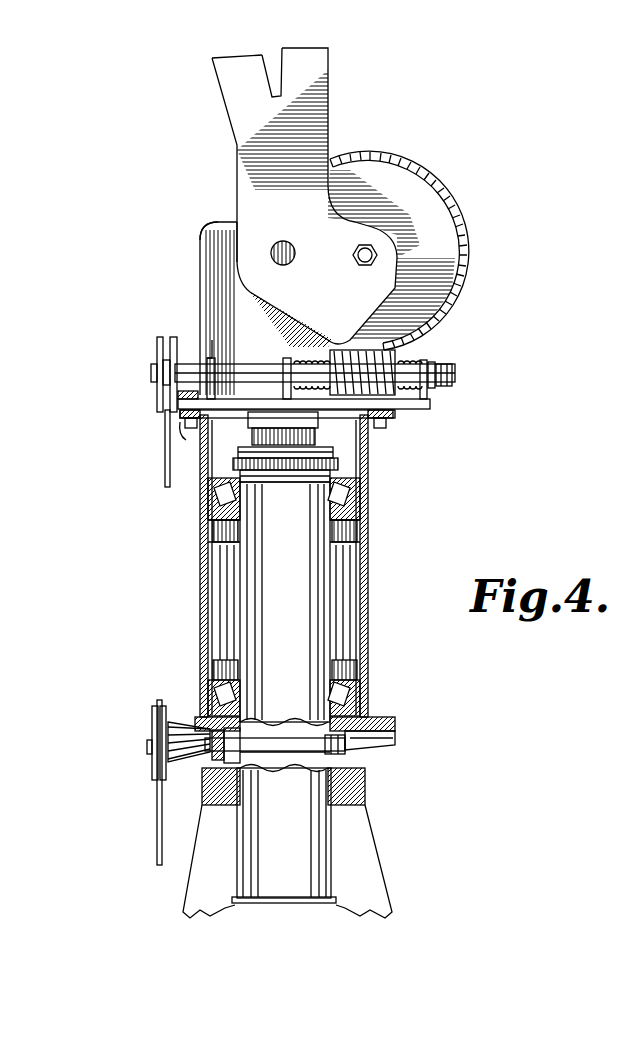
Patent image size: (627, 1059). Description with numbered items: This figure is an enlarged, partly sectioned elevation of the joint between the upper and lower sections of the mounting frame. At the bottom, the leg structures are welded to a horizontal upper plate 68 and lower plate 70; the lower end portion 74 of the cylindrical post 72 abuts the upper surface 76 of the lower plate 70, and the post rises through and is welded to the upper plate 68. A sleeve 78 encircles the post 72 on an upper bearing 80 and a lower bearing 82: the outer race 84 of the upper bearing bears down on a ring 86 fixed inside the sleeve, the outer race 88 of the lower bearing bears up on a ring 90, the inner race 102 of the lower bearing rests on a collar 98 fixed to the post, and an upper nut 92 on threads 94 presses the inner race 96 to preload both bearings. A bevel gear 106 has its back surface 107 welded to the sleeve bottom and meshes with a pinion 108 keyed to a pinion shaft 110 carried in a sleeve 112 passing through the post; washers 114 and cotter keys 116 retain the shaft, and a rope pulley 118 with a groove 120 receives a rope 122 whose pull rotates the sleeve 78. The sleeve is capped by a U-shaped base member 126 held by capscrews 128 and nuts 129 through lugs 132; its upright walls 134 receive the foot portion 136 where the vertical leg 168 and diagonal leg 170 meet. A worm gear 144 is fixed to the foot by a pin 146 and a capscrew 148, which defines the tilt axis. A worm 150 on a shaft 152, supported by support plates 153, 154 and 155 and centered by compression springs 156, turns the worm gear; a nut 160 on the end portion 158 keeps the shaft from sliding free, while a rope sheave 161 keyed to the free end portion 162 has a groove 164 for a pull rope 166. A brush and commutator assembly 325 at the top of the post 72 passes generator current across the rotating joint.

The upper plate 68 is at (362, 792).
The lower plate 70 is at (285, 900).
The post 72 is at (328, 590).
The lower end portion 74 is at (335, 878).
The upper surface 76 is at (335, 893).
The sleeve 78 is at (368, 556).
The upper radial thrust bearing 80 is at (340, 493).
The lower radial thrust bearing 82 is at (365, 683).
The outer race 84 is at (358, 510).
The ring 86 is at (360, 520).
The outer race 88 is at (360, 685).
The ring 90 is at (365, 655).
The upper nut 92 is at (336, 465).
The threads 94 is at (330, 452).
The inner race 96 is at (328, 480).
The collar 98 is at (195, 730).
The inner race 102 is at (355, 712).
The bevel gear 106 is at (385, 742).
The back surface 107 is at (392, 718).
The pinion 108 is at (190, 760).
The pinion shaft 110 is at (205, 760).
The sleeve 112 is at (290, 760).
The washer 114 is at (300, 760).
The cotter key 116 is at (338, 748).
The rope pulley 118 is at (158, 728).
The pulley groove 120 is at (155, 720).
The rope 122 is at (158, 848).
The base member 126 is at (202, 266).
The capscrews 128 is at (175, 396).
The nuts 129 is at (180, 430).
The lugs 132 is at (190, 414).
The upright walls 134 is at (205, 232).
The foot portion 136 is at (248, 246).
The worm gear 144 is at (435, 195).
The pin 146 is at (280, 250).
The capscrew 148 is at (372, 255).
The worm 150 is at (392, 352).
The shaft 152 is at (272, 380).
The support plate 153 is at (212, 355).
The support plate 154 is at (290, 380).
The support plate 155 is at (452, 363).
The compression springs 156 is at (404, 390).
The end portion 158 is at (432, 392).
The nut 160 is at (450, 372).
The rope sheave 161 is at (152, 374).
The free end portion 162 is at (165, 368).
The groove 164 is at (160, 355).
The pull rope 166 is at (167, 470).
The vertical leg 168 is at (332, 55).
The diagonal leg 170 is at (212, 75).
The brush and commutator assembly 325 is at (326, 427).